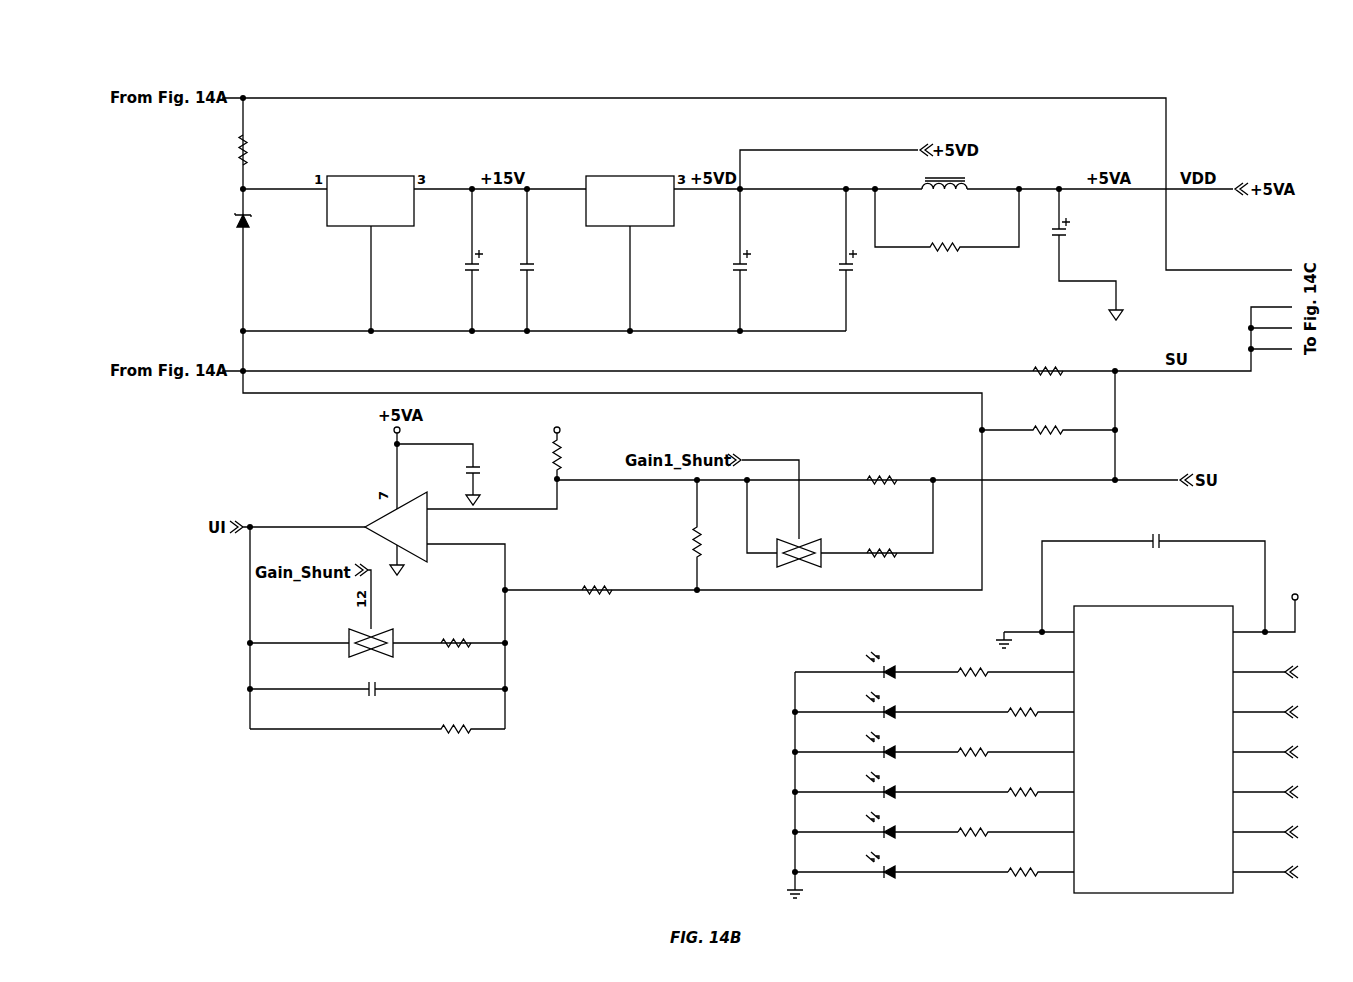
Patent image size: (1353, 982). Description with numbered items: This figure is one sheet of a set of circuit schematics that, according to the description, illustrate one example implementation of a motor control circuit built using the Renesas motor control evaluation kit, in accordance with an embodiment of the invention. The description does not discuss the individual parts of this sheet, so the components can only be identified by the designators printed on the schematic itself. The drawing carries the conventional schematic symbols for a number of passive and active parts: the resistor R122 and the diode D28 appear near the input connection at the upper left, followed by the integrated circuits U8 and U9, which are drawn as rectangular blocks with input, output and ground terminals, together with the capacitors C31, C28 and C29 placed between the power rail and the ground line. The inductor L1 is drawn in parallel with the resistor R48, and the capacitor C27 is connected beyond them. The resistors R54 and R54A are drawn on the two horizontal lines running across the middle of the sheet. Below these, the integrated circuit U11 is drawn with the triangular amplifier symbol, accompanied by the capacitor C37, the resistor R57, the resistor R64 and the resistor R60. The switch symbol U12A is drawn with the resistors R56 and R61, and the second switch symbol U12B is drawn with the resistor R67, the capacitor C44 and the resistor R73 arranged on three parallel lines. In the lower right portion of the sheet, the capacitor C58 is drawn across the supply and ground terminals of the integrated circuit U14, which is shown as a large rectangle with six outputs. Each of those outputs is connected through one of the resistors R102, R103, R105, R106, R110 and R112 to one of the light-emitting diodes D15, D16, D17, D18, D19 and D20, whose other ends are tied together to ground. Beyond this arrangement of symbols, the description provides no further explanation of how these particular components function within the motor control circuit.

The resistor 0E R122 is at (267, 150).
The zener diode (NA) D28 is at (261, 232).
The voltage regulator MC7615CDT/RK U8 is at (375, 235).
The voltage regulator MC7605CDT/RK U9 is at (632, 235).
The capacitors 150uF 25V / 0.1uF C31 is at (481, 260).
The capacitor 22uF 16V C28 is at (703, 260).
The capacitor 10uF 25V C29 is at (808, 260).
The inductor 100uK L1 is at (936, 191).
The resistor 100E R48 is at (947, 228).
The capacitor 10uF 25V C27 is at (1103, 254).
The shunt resistor 0.05 SW R54 is at (1068, 414).
The shunt resistor 0.05 SW SWD R54A is at (1048, 429).
The op-amp MC33201DR2G U11 is at (347, 519).
The capacitor 0.1uF C37 is at (464, 474).
The resistor 100K R57 is at (573, 444).
The resistor 15K R64 is at (599, 591).
The resistor DNF R60 is at (716, 536).
The analog switch MC14066BDR2 U12A is at (840, 523).
The resistor 10K 1% R56 is at (884, 481).
The resistor 10K 1% R61 is at (884, 557).
The analog switch MC14066BDR2 U12B is at (377, 625).
The resistor 135K R67 is at (459, 644).
The capacitor 5pF C44 is at (377, 688).
The resistor 135K R73 is at (377, 729).
The capacitor 0.1uF C58 is at (1153, 574).
The hex inverter MC74HC14ADR2 U14 is at (1162, 734).
The LED D15 is at (876, 665).
The LED D16 is at (901, 705).
The LED D17 is at (876, 745).
The LED D18 is at (901, 785).
The LED D19 is at (876, 825).
The LED D20 is at (901, 865).
The resistor 330E R102 is at (1014, 672).
The resistor 330E R103 is at (1039, 712).
The resistor 330E R105 is at (1014, 752).
The resistor 330E R106 is at (1039, 792).
The resistor 330E R110 is at (1014, 832).
The resistor 330E R112 is at (1039, 872).